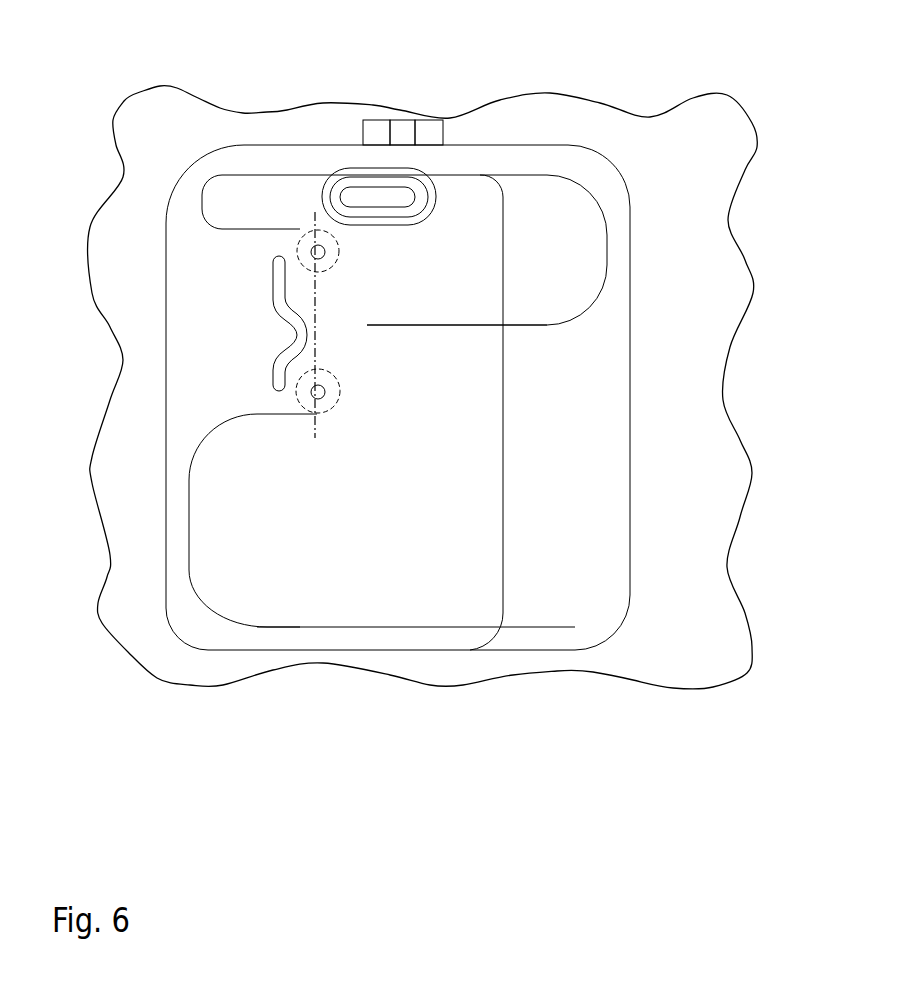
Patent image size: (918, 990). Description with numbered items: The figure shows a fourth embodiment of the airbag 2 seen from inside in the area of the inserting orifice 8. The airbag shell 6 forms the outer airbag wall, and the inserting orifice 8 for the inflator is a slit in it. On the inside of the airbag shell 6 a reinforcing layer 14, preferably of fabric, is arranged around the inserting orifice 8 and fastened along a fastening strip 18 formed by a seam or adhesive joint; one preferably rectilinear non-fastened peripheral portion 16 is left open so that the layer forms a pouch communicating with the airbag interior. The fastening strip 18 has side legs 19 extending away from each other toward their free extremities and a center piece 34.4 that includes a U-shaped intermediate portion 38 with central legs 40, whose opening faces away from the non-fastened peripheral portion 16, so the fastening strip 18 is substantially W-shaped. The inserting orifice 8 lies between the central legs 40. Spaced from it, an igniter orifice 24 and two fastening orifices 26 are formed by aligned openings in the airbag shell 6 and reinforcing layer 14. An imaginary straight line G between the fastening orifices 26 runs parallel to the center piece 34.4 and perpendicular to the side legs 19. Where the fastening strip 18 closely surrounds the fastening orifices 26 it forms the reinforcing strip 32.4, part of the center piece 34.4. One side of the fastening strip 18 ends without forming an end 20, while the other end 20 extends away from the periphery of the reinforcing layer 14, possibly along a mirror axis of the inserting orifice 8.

The airbag 2 is at (167, 56).
The airbag shell 6 is at (257, 131).
The inserting orifice 8 is at (277, 371).
The reinforcing layer 14 is at (592, 172).
The non-fastened peripheral portion 16 is at (650, 384).
The fastening strip 18 is at (257, 627).
The side legs 19 is at (447, 172).
The end 20 is at (517, 327).
The igniter orifice 24 is at (360, 193).
The fastening orifices 26 is at (322, 258).
The reinforcing strip 32.4 is at (313, 278).
The center piece 34.4 is at (190, 540).
The U-shaped intermediate portion 38 is at (190, 325).
The central legs 40 is at (234, 230).
The imaginary straight line G is at (262, 411).